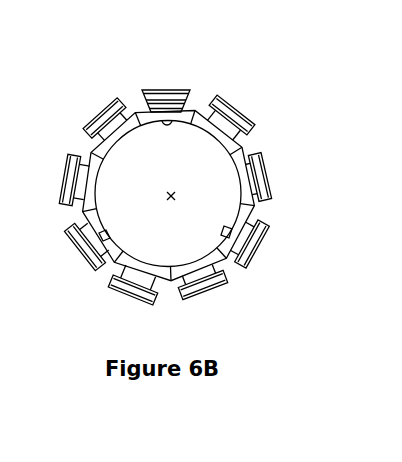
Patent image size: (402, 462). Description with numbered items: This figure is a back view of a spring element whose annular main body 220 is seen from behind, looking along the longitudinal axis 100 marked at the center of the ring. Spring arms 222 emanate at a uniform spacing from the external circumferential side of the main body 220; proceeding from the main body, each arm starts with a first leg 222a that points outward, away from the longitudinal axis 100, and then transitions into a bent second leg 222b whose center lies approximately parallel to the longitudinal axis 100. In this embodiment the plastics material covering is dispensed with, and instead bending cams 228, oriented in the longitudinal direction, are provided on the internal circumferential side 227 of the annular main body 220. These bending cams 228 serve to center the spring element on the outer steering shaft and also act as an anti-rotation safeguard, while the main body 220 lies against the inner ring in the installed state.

The longitudinal axis 100 is at (176, 199).
The annular main body 220 is at (228, 147).
The spring arm 222 is at (244, 265).
The first leg 222a is at (160, 91).
The second leg 222b is at (267, 174).
The internal circumferential side 227 is at (82, 210).
The bending cam 228 is at (191, 92).